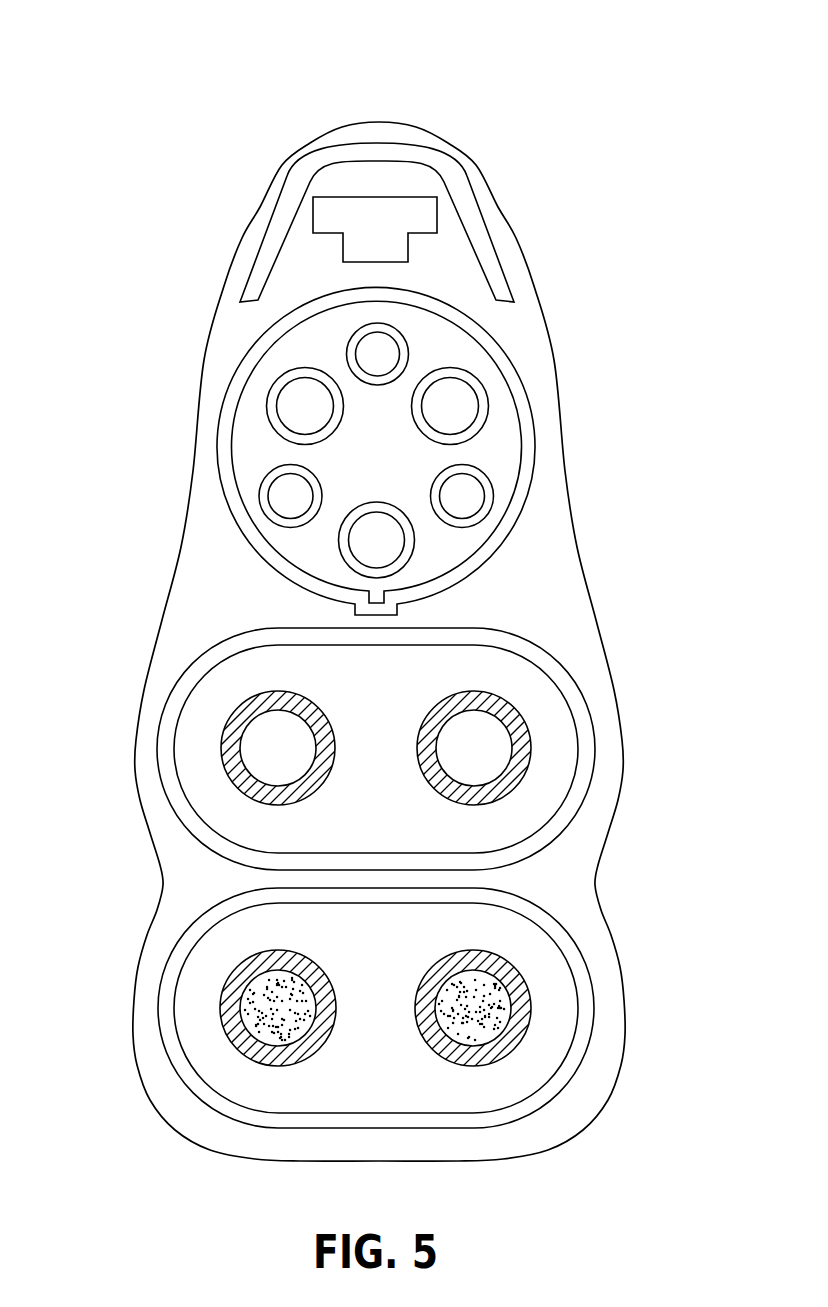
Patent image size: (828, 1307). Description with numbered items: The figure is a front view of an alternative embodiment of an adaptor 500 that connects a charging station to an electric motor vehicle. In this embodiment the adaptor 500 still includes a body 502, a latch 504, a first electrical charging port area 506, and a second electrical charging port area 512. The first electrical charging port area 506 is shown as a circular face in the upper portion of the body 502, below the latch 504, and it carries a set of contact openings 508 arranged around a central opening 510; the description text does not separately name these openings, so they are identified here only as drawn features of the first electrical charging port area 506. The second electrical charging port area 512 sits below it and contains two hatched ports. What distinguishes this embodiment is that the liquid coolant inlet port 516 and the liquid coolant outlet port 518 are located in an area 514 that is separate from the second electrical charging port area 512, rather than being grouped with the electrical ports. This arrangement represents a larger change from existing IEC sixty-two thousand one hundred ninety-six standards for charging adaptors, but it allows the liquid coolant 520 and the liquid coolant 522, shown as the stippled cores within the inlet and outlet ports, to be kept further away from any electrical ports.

The adaptor 500 is at (310, 76).
The body 502 is at (523, 340).
The latch 504 is at (330, 215).
The first electrical charging port area 506 is at (437, 547).
The contact receptacles 508 is at (295, 398).
The center contact receptacle 510 is at (375, 355).
The second electrical charging port area 512 is at (432, 710).
The area 514 is at (157, 1007).
The liquid coolant inlet port 516 is at (546, 978).
The liquid coolant outlet port 518 is at (201, 976).
The liquid coolant 520 is at (478, 1013).
The liquid coolant 522 is at (267, 1012).